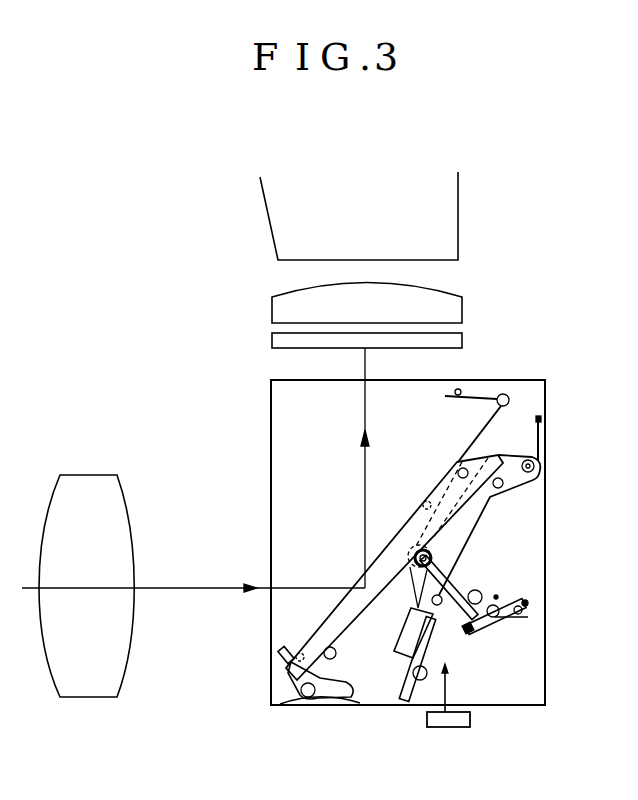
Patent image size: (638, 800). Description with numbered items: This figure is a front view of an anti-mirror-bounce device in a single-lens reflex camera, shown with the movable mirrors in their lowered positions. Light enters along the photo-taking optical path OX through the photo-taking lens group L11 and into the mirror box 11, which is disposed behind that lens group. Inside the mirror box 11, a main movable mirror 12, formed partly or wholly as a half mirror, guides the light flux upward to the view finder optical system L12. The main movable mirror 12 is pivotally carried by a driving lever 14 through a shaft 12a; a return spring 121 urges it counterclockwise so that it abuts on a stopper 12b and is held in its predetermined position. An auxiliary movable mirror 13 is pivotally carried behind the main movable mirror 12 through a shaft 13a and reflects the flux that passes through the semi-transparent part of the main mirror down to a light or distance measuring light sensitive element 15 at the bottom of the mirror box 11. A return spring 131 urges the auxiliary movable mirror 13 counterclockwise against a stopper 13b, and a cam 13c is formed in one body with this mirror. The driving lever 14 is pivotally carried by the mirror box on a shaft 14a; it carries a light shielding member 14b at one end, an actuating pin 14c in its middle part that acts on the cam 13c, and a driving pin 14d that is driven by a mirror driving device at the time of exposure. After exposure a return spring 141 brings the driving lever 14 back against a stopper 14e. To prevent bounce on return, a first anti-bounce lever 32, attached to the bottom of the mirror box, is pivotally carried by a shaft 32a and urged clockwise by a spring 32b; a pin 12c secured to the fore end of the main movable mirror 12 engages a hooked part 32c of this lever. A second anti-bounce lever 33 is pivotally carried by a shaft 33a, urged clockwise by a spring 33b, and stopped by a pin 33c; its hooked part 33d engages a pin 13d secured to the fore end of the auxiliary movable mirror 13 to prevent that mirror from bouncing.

The mirror box 11 is at (273, 400).
The main movable mirror 12 is at (503, 456).
The shaft 12a is at (460, 470).
The stopper 12b is at (336, 653).
The pin 12c is at (302, 653).
The auxiliary movable mirror 13 is at (474, 590).
The shaft 13a is at (433, 557).
The stopper 13b is at (488, 603).
The cam 13c is at (411, 602).
The pin 13d is at (497, 596).
The driving lever 14 is at (535, 481).
The shaft 14a is at (541, 462).
The light shielding member 14b is at (407, 707).
The actuating pin 14c is at (440, 606).
The driving pin 14d is at (501, 488).
The stopper 14e is at (444, 708).
The light or distance measuring light sensitive element 15 is at (471, 724).
The anti-bounce lever 32 is at (333, 707).
The shaft 32a is at (313, 706).
The spring 32b is at (283, 692).
The hooked part 32c is at (281, 654).
The anti-bounce lever 33 is at (528, 602).
The shaft 33a is at (498, 619).
The spring 33b is at (490, 632).
The pin 33c is at (521, 612).
The hooked part 33d is at (474, 635).
The return spring 121 is at (487, 393).
The return spring 131 is at (398, 568).
The return spring 141 is at (540, 433).
The photo-taking lens group L11 is at (128, 503).
The view finder optical system L12 is at (491, 165).
The optical axis OX is at (89, 588).